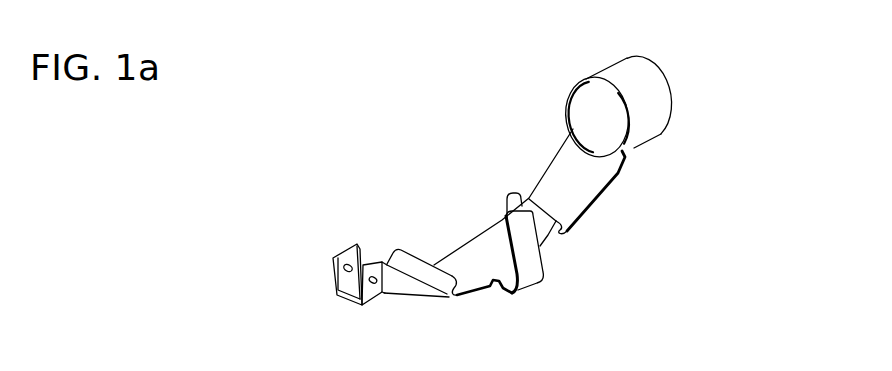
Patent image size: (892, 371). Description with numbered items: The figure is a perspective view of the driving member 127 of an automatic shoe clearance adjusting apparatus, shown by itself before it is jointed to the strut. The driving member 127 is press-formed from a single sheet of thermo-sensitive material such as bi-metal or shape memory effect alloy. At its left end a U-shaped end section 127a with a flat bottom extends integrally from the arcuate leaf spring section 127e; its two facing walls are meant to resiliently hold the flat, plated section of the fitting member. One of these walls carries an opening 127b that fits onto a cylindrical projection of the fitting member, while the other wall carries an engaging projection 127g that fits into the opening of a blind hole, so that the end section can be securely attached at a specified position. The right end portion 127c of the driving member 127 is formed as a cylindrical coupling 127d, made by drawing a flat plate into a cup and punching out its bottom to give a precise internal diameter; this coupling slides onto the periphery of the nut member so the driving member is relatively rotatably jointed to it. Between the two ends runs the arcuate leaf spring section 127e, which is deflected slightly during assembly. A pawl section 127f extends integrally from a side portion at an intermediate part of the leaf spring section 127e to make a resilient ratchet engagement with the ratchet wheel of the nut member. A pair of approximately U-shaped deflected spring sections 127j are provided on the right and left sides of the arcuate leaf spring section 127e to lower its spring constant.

The driving member 127 is at (469, 242).
The U-shaped end section 127a is at (351, 292).
The opening 127b is at (388, 286).
The right end portion 127c is at (640, 147).
The cylindrical coupling 127d is at (576, 94).
The arcuate leaf spring section 127e is at (554, 243).
The pawl section 127f is at (523, 236).
The engaging projection 127g is at (353, 254).
The U-shaped deflected spring sections 127j is at (411, 254).